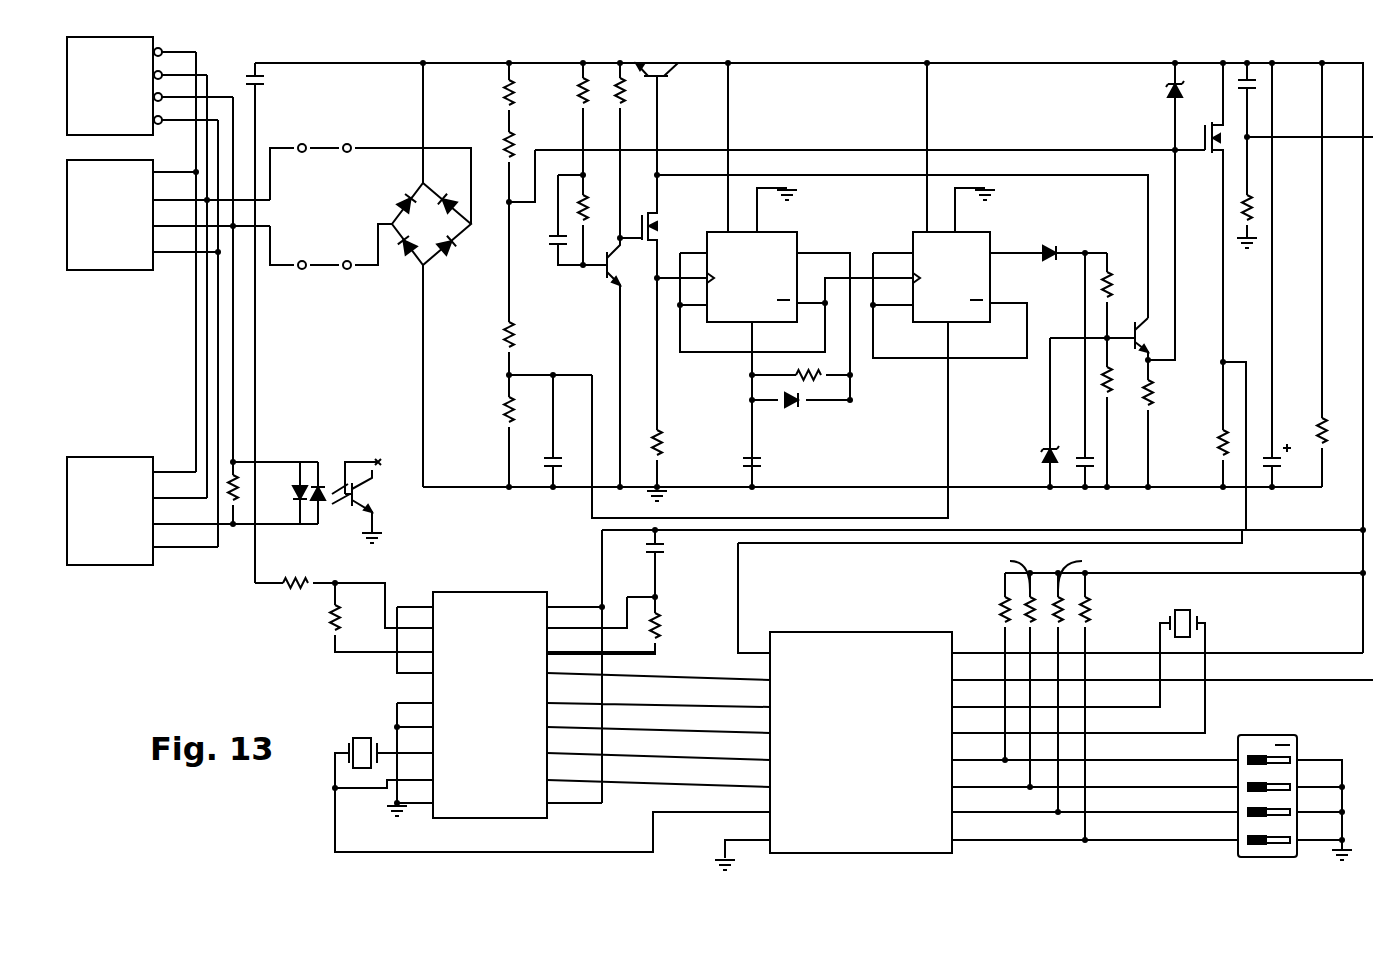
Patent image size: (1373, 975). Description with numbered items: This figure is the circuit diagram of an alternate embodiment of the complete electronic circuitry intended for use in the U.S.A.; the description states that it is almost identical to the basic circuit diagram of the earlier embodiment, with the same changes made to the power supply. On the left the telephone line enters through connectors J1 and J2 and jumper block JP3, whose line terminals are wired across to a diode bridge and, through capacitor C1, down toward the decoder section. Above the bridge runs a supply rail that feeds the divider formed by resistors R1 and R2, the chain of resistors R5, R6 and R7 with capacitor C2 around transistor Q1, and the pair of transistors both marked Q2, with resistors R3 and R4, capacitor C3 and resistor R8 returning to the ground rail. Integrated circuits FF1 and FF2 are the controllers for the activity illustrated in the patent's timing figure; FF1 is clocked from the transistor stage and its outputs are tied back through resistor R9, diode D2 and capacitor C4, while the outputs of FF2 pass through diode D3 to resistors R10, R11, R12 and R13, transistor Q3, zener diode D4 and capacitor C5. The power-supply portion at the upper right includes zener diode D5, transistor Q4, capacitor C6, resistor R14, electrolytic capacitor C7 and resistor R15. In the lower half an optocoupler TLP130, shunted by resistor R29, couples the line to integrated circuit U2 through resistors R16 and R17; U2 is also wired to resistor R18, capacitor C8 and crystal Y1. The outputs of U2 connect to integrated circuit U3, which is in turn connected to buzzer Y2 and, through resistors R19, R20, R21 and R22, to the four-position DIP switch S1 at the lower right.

The jumper connector JP3 is at (150, 76).
The telephone line connector J1 is at (168, 204).
The telephone line connector J2 is at (192, 500).
The capacitor 1.5nF C1 is at (279, 323).
The resistor 20M R1 is at (486, 97).
The resistor 5.6M R2 is at (518, 168).
The resistor 5.6M R3 is at (487, 290).
The resistor 3M R4 is at (534, 432).
The resistor 20M R5 is at (565, 120).
The resistor 5.6M R6 is at (601, 221).
The resistor 10M R7 is at (615, 152).
The resistor 10K R8 is at (675, 465).
The resistor 1.5M R9 is at (801, 368).
The resistor 300K R10 is at (1126, 297).
The resistor 750K R11 is at (1124, 414).
The resistor 10K R12 is at (1168, 425).
The resistor 47K R13 is at (1205, 426).
The resistor 1.5M R14 is at (1276, 192).
The resistor 47K R15 is at (1339, 275).
The resistor 100K R16 is at (326, 603).
The resistor 100K R17 is at (363, 617).
The resistor 750K R18 is at (626, 625).
The resistor 300K R19 is at (981, 668).
The resistor 300K R20 is at (976, 670).
The resistor 300K R21 is at (1107, 682).
The resistor 300K R22 is at (1108, 706).
The resistor 100 R29 is at (239, 511).
The capacitor 0.1MF C2 is at (556, 221).
The capacitor 0.33MF C3 is at (545, 442).
The capacitor 0.1MF C4 is at (779, 443).
The capacitor 1.0MF C5 is at (1098, 383).
The capacitor 0.1uF C6 is at (1284, 88).
The capacitor 100uF C7 is at (1297, 288).
The capacitor 100nF C8 is at (681, 563).
The transistor MPSA42 Q1 is at (589, 364).
The transistor MPSA92 / PKBF1A Q2 is at (675, 246).
The transistor MPSA42 Q3 is at (1133, 230).
The transistor P1BF-007 Q4 is at (1167, 296).
The diode 1N4148 D2 is at (807, 411).
The diode 1N4148 D3 is at (1048, 269).
The zener diode 3.6V D4 is at (1024, 414).
The zener diode IM750A D5 is at (1128, 108).
The integrated circuit FF1 is at (785, 276).
The integrated circuit FF2 is at (812, 290).
The DTMF receiver UM-92870CM U2 is at (578, 687).
The controller BK1956 U3 is at (1044, 746).
The crystal 3.579MHz Y1 is at (525, 787).
The buzzer Y2 is at (1217, 614).
The DIP switch SW DIP-4 S1 is at (1287, 800).
The optocoupler TLP130 (M11AA4) TLP130 is at (307, 505).